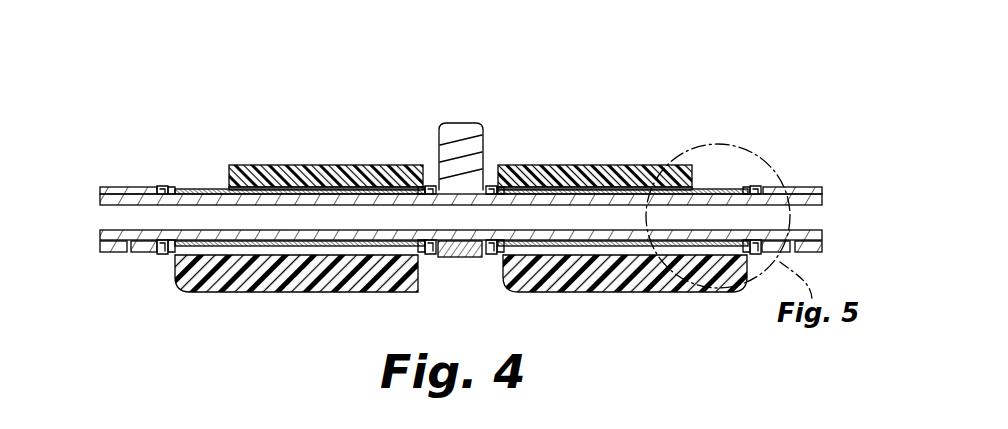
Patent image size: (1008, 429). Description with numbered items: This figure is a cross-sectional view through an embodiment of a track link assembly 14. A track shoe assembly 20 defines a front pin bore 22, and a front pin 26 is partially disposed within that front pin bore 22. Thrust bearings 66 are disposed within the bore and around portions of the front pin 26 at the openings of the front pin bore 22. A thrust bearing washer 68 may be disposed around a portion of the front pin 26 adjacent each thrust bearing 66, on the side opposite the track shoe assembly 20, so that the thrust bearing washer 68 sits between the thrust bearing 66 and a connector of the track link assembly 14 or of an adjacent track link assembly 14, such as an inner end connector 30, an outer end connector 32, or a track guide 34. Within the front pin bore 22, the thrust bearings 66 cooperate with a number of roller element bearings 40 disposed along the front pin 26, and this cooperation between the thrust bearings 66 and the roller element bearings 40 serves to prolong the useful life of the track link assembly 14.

The track link assembly 14 is at (158, 78).
The track shoe assembly 20 is at (265, 165).
The front pin bore 22 is at (322, 190).
The front pin 26 is at (822, 240).
The inner end connector 30 is at (100, 188).
The outer end connector 32 is at (822, 189).
The track guide 34 is at (459, 123).
The roller element bearings 40 is at (226, 190).
The thrust bearings 66 is at (170, 187).
The thrust bearing washer 68 is at (160, 187).